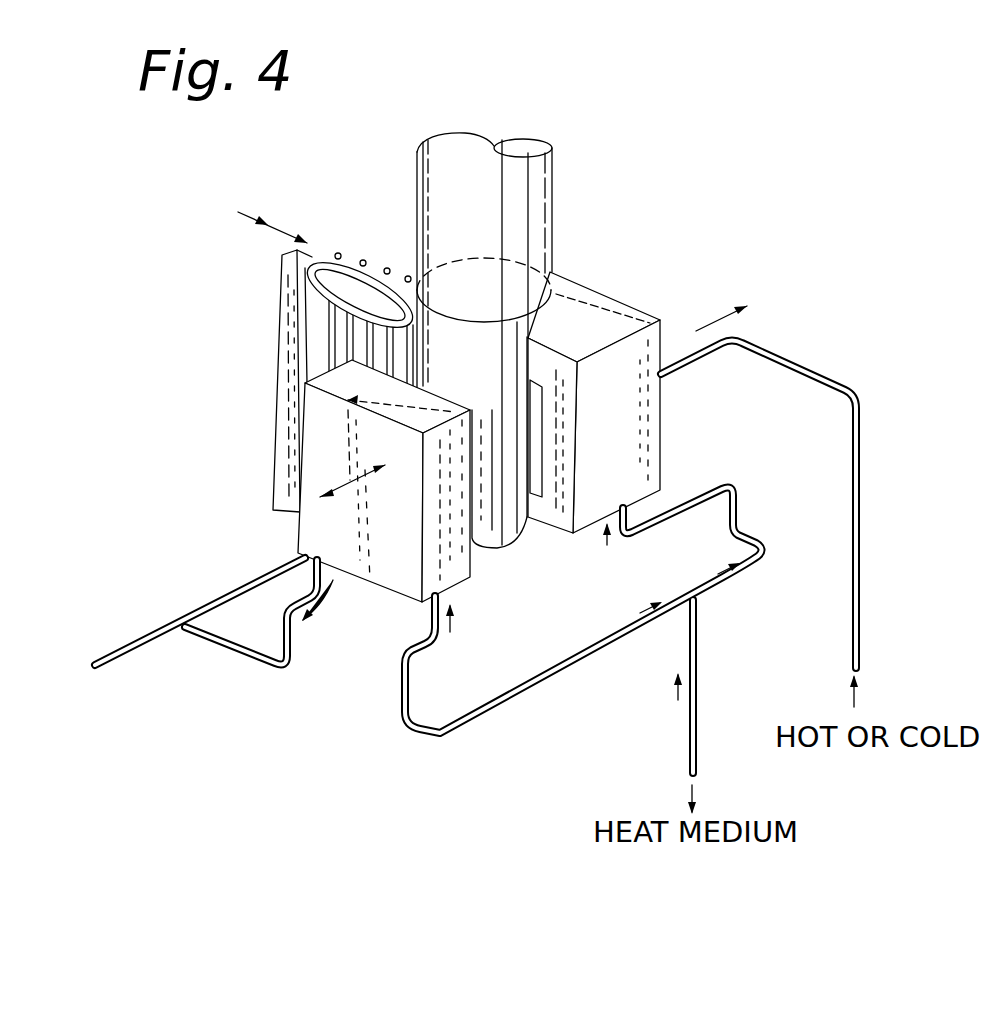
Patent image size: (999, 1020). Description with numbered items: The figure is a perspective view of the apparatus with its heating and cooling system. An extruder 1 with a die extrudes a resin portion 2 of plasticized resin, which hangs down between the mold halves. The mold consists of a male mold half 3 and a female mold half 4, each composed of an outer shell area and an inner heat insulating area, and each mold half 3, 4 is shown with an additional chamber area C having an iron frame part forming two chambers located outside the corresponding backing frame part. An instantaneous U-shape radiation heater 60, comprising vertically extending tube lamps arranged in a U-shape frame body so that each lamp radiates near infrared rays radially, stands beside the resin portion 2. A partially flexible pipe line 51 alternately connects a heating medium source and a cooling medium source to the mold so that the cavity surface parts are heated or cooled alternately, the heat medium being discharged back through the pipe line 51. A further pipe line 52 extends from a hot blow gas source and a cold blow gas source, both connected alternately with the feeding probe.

The extruder 1 is at (523, 200).
The resin portion 2 is at (450, 333).
The male mold half 3 is at (395, 575).
The female mold half 4 is at (655, 398).
The partially flexible pipe line 51 is at (232, 655).
The pipe line 52 is at (865, 464).
The instantaneous U-shape radiation heater 60 is at (288, 304).
The additional chamber area C is at (317, 463).